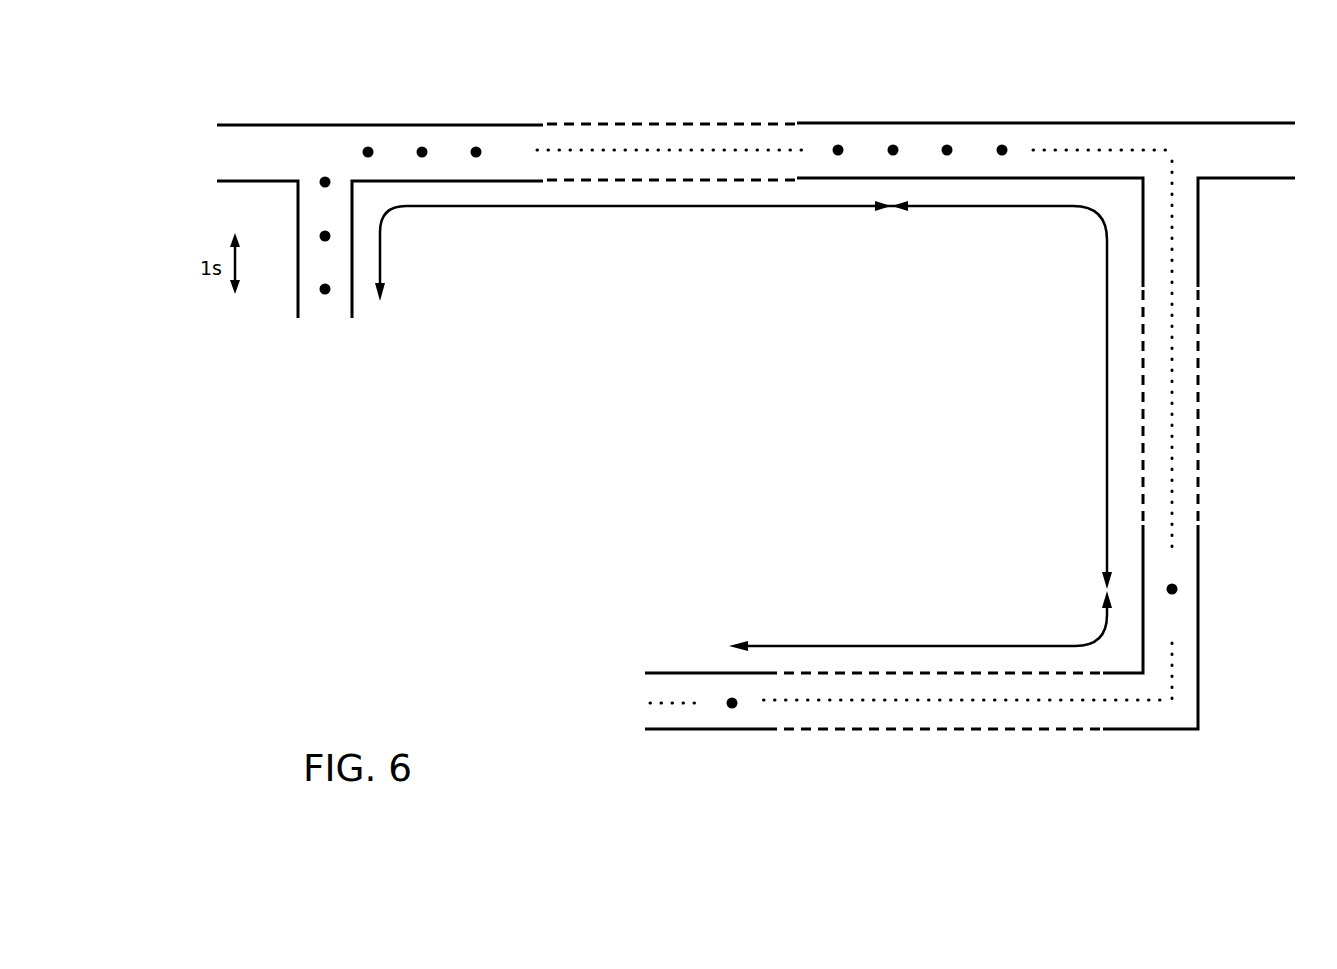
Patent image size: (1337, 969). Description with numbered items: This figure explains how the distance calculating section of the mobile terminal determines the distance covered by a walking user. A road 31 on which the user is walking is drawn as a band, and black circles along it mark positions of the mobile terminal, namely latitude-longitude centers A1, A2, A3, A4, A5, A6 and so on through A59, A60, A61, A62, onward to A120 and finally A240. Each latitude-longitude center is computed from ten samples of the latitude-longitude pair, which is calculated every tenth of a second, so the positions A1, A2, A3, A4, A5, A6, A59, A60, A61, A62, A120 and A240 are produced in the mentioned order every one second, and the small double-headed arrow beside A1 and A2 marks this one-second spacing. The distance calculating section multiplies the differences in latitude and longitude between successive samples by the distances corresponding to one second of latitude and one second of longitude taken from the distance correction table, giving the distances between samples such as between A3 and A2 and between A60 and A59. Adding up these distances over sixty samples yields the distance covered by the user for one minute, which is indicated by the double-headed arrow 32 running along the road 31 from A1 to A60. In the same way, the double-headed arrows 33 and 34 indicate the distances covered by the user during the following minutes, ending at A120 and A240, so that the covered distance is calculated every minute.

The road 31 is at (531, 124).
The double-headed arrow 32 is at (613, 208).
The double-headed arrow 33 is at (1106, 422).
The double-headed arrow 34 is at (933, 645).
The position of the mobile terminal A1 is at (292, 289).
The position of the mobile terminal A2 is at (292, 238).
The position of the mobile terminal A3 is at (306, 165).
The position of the mobile terminal A4 is at (366, 125).
The position of the mobile terminal A5 is at (421, 125).
The position of the mobile terminal A6 is at (476, 125).
The position of the mobile terminal A59 is at (831, 123).
The position of the mobile terminal A60 is at (890, 123).
The position of the mobile terminal A61 is at (951, 123).
The position of the mobile terminal A62 is at (1011, 123).
The position of the mobile terminal A120 is at (1222, 591).
The position of the mobile terminal A240 is at (730, 735).